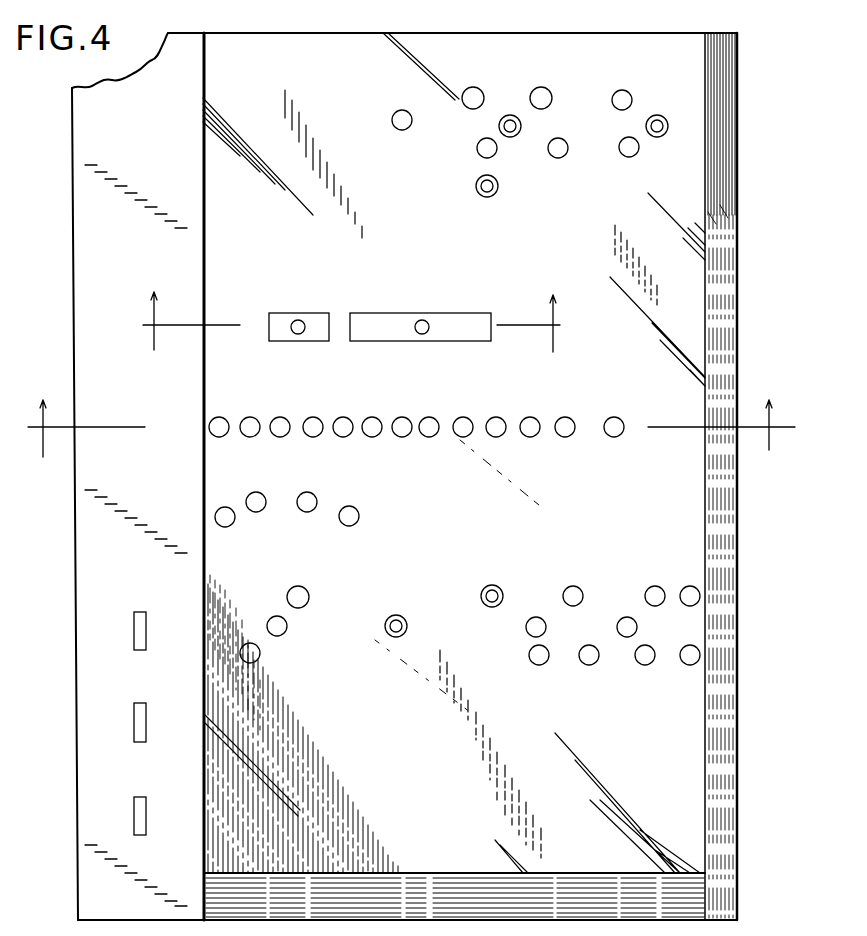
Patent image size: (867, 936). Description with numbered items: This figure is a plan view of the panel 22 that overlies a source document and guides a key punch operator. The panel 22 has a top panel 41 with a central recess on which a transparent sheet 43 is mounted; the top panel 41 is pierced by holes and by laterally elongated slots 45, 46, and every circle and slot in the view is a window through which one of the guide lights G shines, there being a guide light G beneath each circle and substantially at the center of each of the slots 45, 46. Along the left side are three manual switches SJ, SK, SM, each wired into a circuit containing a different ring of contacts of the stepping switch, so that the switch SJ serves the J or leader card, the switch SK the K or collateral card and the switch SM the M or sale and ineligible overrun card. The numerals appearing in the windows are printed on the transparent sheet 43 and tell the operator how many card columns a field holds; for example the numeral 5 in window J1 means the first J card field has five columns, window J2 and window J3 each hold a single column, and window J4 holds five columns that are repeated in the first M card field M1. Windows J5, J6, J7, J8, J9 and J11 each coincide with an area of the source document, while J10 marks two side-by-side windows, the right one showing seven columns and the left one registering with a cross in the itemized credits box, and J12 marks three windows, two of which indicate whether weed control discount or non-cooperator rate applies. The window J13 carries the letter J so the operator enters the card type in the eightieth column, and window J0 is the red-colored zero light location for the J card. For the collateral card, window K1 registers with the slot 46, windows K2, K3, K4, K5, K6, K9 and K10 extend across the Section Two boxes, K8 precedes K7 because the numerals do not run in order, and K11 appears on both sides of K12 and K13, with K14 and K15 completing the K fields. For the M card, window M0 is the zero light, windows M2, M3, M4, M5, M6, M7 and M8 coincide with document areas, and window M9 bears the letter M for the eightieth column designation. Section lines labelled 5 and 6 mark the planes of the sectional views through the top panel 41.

The panel 22 is at (741, 186).
The top panel 41 is at (145, 144).
The transparent sheet 43 is at (463, 809).
The slot 45 is at (280, 320).
The slot 46 is at (478, 322).
The numeral printed in the J1 window 5 is at (404, 429).
The section line 6- 6 is at (351, 322).
The guide light G is at (298, 334).
The window K1 is at (422, 313).
The window K2 is at (219, 417).
The window K3 is at (253, 412).
The window K4 is at (280, 417).
The window K5 is at (313, 417).
The window K6 is at (343, 417).
The window K7 is at (402, 417).
The window K8 is at (372, 417).
The window K9 is at (432, 411).
The window K10 is at (463, 417).
The window K11 is at (312, 313).
The window K12 is at (530, 417).
The window K13 is at (568, 412).
The window K14 is at (310, 492).
The window K15 is at (359, 514).
The zero light window J0 is at (497, 190).
The window J1 is at (631, 95).
The window J2 is at (541, 87).
The window J3 is at (473, 87).
The window J4 is at (412, 98).
The window J5 is at (497, 152).
The window J6 is at (631, 157).
The window J7 is at (560, 158).
The window J8 is at (225, 507).
The window J9 is at (258, 492).
The windows J10 is at (500, 574).
The window J11 is at (309, 594).
The windows J12 is at (521, 126).
The window J13 is at (688, 586).
The zero light window M0 is at (406, 622).
The window M1 is at (407, 129).
The window M2 is at (255, 662).
The window M3 is at (287, 627).
The window M4 is at (526, 630).
The window M5 is at (624, 617).
The window M6 is at (537, 665).
The window M7 is at (587, 665).
The window M8 is at (643, 665).
The window M9 is at (688, 665).
The manual switch SJ is at (133, 631).
The manual switch SK is at (133, 723).
The manual switch SM is at (133, 817).